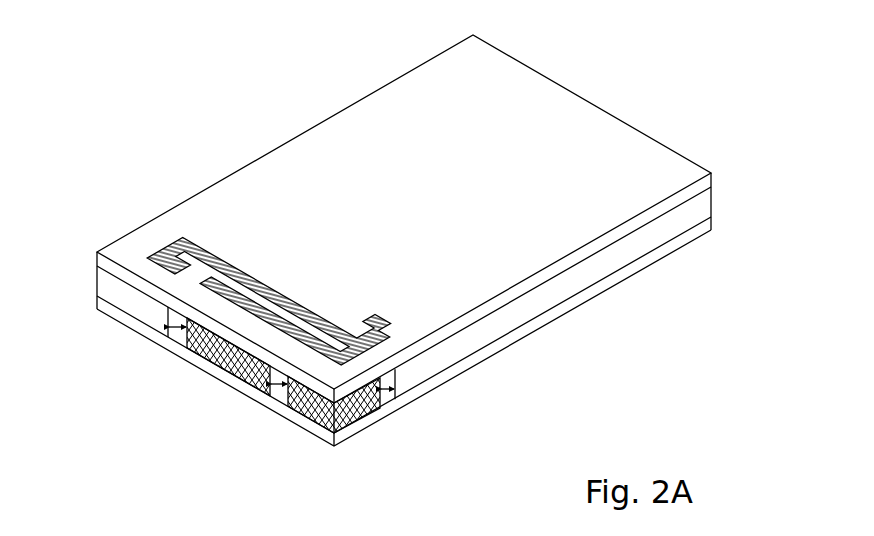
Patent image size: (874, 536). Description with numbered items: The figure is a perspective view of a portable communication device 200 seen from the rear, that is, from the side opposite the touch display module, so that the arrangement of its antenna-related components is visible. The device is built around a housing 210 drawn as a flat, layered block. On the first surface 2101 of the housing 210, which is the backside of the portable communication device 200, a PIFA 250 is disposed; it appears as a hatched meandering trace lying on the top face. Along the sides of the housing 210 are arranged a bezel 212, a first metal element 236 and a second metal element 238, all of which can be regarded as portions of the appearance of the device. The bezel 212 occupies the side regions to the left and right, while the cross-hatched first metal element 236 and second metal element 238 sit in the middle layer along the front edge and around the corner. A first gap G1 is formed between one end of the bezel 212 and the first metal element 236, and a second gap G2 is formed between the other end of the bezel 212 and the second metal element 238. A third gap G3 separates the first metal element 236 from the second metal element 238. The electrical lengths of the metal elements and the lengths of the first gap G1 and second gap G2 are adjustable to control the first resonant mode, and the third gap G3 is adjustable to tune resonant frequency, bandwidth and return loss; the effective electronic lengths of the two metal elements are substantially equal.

The portable communication device 200 is at (108, 52).
The first surface 2101 is at (545, 113).
The housing 210 is at (653, 138).
The bezel 212 is at (135, 302).
The PIFA 250 is at (265, 283).
The first metal element 236 is at (218, 366).
The second metal element 238 is at (313, 412).
The first gap G1 is at (178, 330).
The second gap G2 is at (387, 392).
The third gap G3 is at (282, 388).